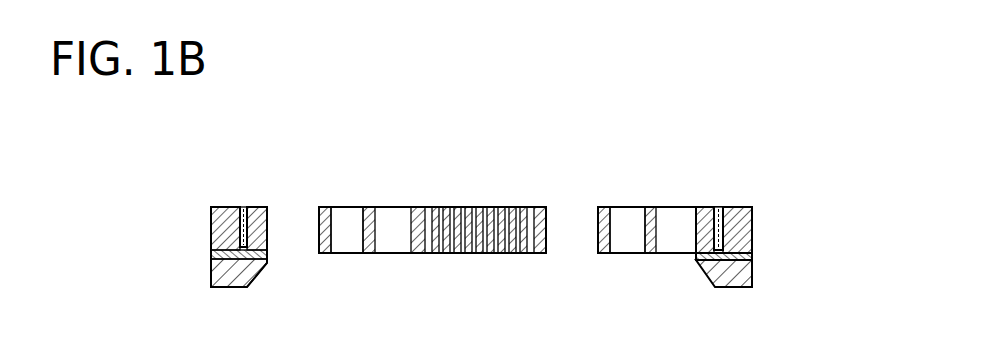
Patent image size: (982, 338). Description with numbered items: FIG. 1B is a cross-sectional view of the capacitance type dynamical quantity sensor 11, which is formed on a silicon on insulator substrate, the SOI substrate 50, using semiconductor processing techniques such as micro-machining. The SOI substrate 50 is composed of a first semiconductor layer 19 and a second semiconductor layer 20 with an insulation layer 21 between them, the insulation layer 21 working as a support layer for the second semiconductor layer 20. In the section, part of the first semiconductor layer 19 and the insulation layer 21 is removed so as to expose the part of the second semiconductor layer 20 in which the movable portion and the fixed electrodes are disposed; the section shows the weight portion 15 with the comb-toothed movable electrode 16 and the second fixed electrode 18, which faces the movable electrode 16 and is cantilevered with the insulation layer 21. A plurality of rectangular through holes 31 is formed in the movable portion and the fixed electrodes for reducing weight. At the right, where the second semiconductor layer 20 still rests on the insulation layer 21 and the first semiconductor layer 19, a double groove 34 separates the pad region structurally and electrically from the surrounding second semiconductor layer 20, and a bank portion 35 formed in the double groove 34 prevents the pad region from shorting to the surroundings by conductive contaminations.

The sensor 11 is at (237, 188).
The weight portion 15 is at (467, 207).
The movable electrode 16 is at (350, 207).
The second fixed electrode 18 is at (622, 217).
The first semiconductor layer 19 is at (760, 287).
The second semiconductor layer 20 is at (750, 192).
The insulation layer 21 is at (752, 257).
The through hole 31 is at (532, 207).
The double groove 34 is at (713, 207).
The bank portion 35 is at (718, 207).
The SOI substrate 50 is at (741, 223).